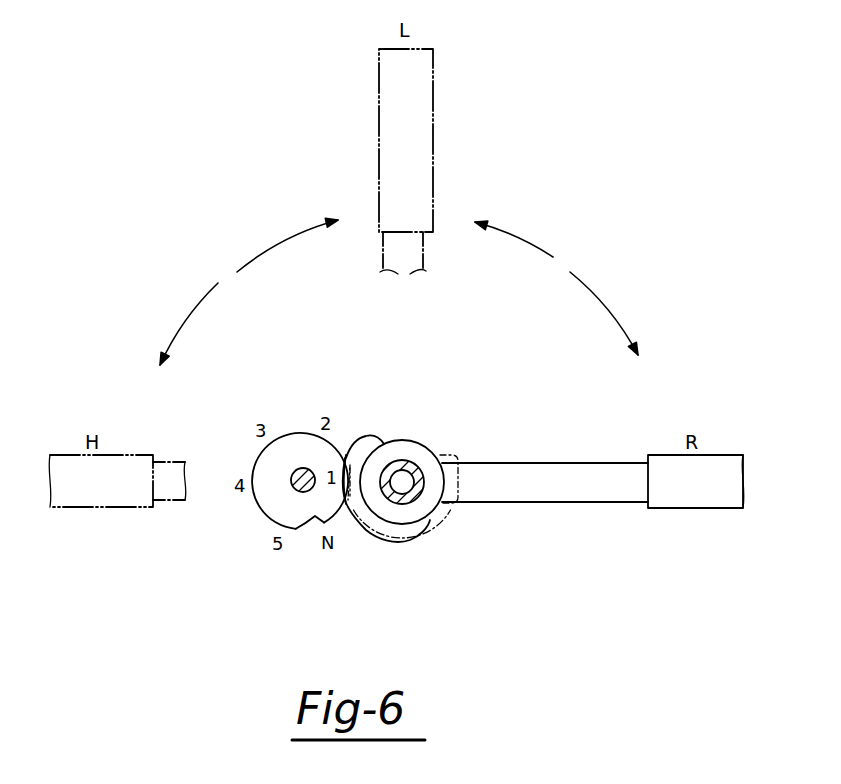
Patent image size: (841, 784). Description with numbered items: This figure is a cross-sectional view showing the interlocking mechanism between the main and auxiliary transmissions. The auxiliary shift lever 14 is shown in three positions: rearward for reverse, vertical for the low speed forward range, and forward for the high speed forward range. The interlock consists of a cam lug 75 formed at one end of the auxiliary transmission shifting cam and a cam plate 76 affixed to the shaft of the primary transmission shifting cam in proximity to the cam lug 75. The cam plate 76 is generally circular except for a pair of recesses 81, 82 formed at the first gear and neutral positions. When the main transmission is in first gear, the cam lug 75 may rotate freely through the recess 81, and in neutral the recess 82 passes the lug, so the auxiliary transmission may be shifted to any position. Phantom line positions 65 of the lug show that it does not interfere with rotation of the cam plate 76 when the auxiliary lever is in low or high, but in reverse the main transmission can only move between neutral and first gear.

The shift lever 14 is at (428, 107).
The cam lug 75 is at (363, 435).
The cam plate 76 is at (277, 508).
The recess 81 is at (344, 460).
The recess 82 is at (316, 521).
The housing outline 65 is at (457, 526).